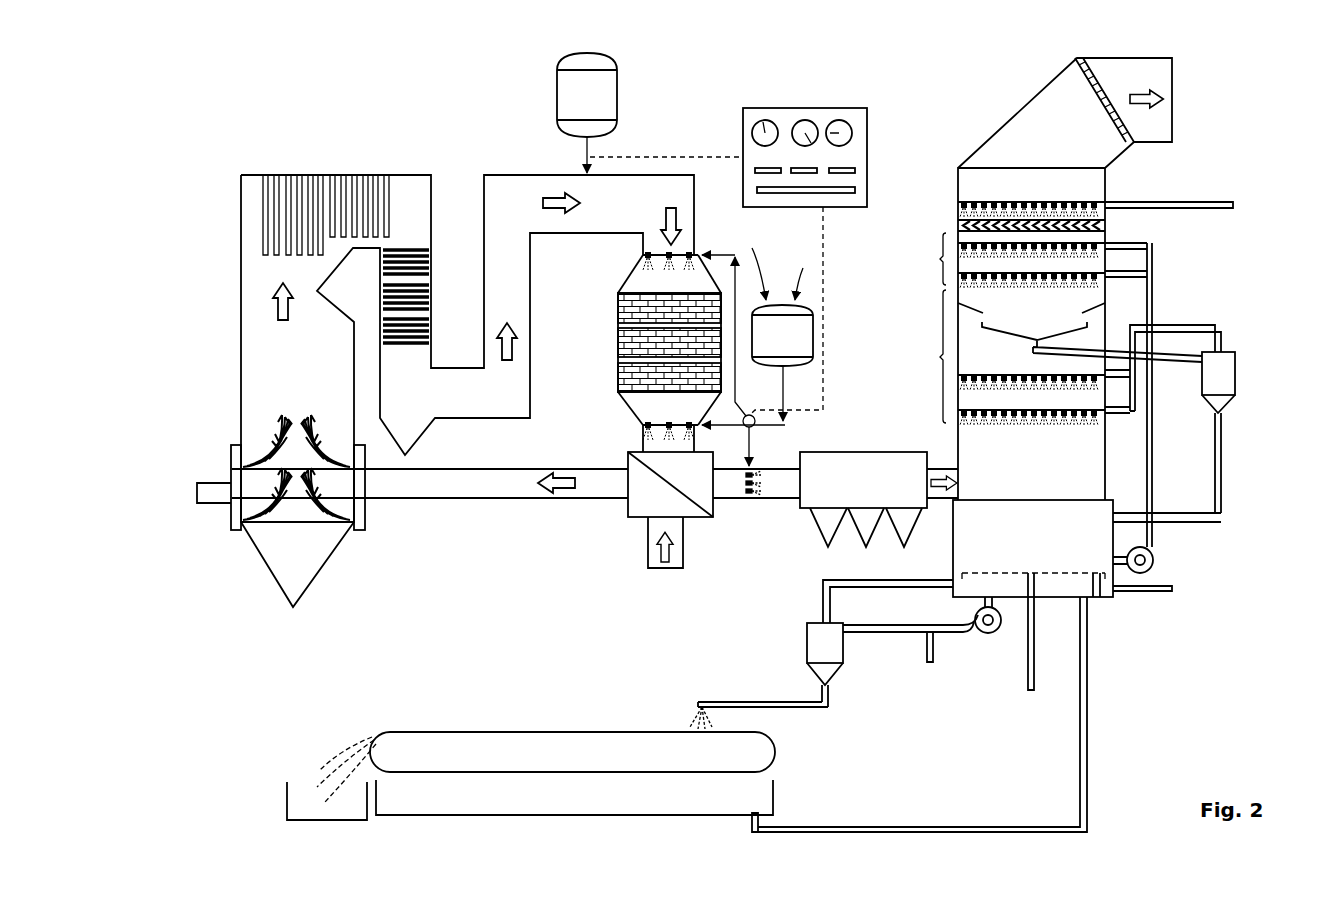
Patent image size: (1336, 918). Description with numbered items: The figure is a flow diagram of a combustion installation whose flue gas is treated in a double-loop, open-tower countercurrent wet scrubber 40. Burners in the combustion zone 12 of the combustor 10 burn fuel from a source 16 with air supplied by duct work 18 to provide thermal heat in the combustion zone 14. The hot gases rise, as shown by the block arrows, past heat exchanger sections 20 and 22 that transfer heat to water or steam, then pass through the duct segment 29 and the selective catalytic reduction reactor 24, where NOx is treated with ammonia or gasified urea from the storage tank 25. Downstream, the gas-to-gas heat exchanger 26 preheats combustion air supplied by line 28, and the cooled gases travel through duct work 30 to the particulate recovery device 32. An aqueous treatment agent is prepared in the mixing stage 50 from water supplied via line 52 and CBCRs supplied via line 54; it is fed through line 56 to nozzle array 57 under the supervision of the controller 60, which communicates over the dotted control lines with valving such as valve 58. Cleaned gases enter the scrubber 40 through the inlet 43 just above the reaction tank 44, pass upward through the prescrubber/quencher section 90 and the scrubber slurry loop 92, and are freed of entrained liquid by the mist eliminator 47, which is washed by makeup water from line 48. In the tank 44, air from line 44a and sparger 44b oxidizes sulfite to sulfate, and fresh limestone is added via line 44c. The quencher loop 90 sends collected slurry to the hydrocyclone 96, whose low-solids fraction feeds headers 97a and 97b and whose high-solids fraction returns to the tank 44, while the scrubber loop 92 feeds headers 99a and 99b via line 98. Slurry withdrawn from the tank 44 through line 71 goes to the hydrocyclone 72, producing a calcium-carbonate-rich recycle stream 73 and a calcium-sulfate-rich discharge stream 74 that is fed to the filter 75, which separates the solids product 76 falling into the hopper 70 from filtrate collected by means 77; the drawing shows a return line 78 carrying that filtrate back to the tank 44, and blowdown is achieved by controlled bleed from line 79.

The combustor 10 is at (291, 150).
The combustion zone burners 12 is at (262, 436).
The combustion zone 14 is at (267, 454).
The fuel source 16 is at (224, 494).
The duct work 18 is at (478, 491).
The heat exchanger section 20 is at (337, 168).
The heat exchanger section 22 is at (428, 288).
The selective catalytic reduction reactor 24 is at (608, 369).
The storage tank 25 is at (587, 113).
The gas-to-gas heat exchanger 26 is at (628, 504).
The air supply line 28 is at (650, 560).
The duct segment 29 is at (648, 408).
The duct work 30 is at (794, 490).
The particulate recovery device 32 is at (863, 499).
The wet scrubber 40 is at (1009, 112).
The inlet 43 is at (958, 484).
The reaction tank 44 is at (1087, 625).
The air line 44a is at (1031, 690).
The sparger 44b is at (1094, 584).
The limestone line 44c is at (1173, 591).
The mist eliminator 47 is at (1096, 86).
The makeup water line 48 is at (1215, 202).
The mixing stage 50 is at (782, 335).
The water line 52 is at (752, 262).
The CBCR supply line 54 is at (802, 272).
The CBCR line 56 is at (703, 428).
The nozzle array 57 is at (645, 436).
The valve 58 is at (757, 417).
The controller 60 is at (866, 150).
The hopper 70 is at (290, 778).
The slurry withdrawal line 71 is at (883, 633).
The hydrocyclone 72 is at (825, 665).
The recycle stream 73 is at (840, 580).
The discharge stream 74 is at (756, 700).
The filter 75 is at (445, 734).
The solids product 76 is at (330, 755).
The filtrate collection means 77 is at (574, 797).
The filtrate return pipe 78 is at (941, 827).
The bleed line 79 is at (934, 648).
The prescrubber/quencher section 90 is at (1051, 381).
The scrubber slurry loop 92 is at (1003, 260).
The hydrocyclone 96 is at (1170, 419).
The header 97a is at (1027, 422).
The header 97b is at (1066, 388).
The line 98 is at (1152, 472).
The header 99a is at (1136, 244).
The header 99b is at (1136, 273).